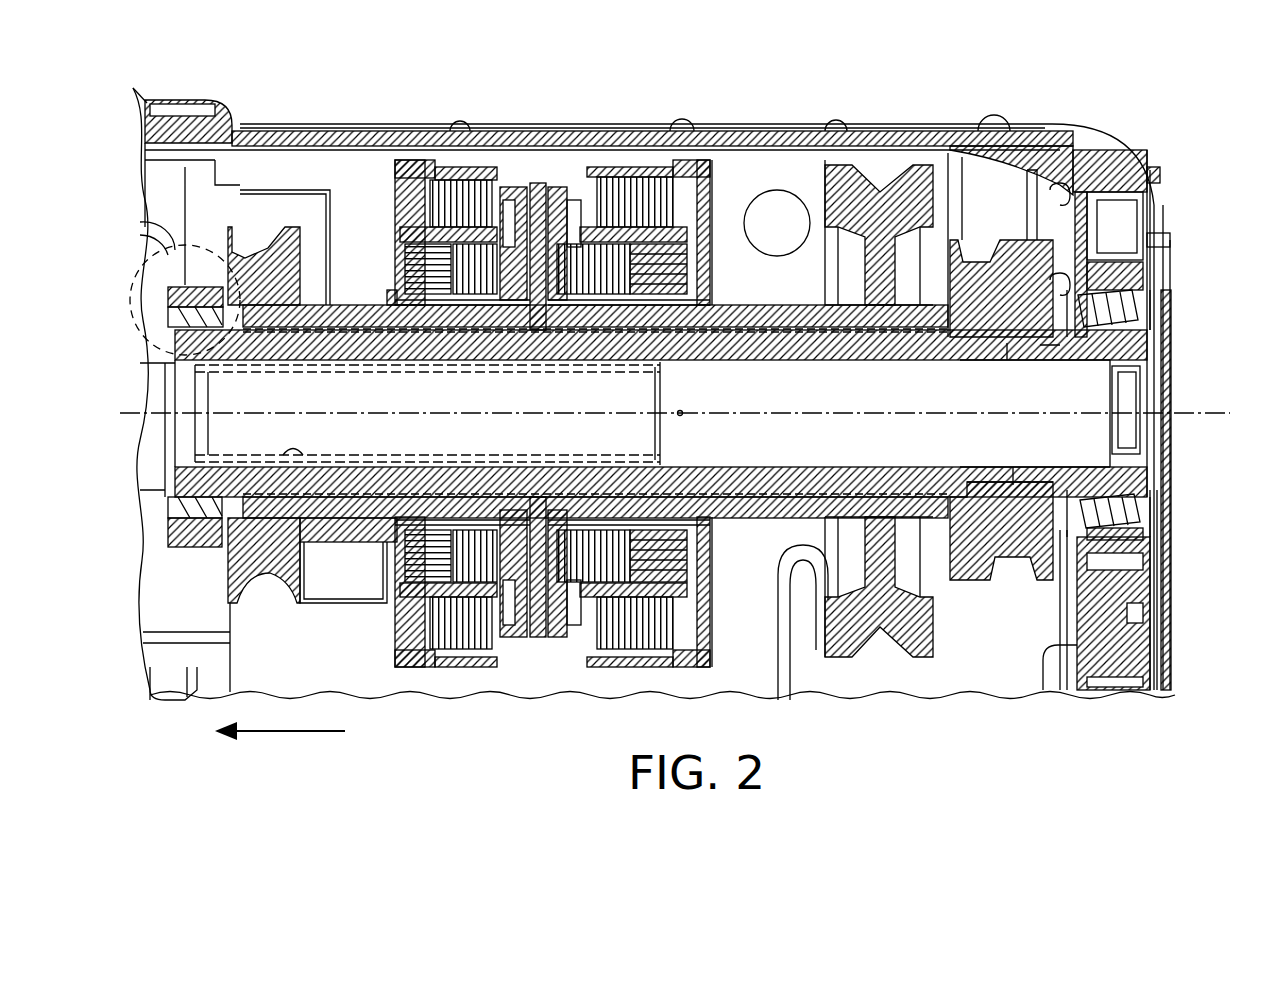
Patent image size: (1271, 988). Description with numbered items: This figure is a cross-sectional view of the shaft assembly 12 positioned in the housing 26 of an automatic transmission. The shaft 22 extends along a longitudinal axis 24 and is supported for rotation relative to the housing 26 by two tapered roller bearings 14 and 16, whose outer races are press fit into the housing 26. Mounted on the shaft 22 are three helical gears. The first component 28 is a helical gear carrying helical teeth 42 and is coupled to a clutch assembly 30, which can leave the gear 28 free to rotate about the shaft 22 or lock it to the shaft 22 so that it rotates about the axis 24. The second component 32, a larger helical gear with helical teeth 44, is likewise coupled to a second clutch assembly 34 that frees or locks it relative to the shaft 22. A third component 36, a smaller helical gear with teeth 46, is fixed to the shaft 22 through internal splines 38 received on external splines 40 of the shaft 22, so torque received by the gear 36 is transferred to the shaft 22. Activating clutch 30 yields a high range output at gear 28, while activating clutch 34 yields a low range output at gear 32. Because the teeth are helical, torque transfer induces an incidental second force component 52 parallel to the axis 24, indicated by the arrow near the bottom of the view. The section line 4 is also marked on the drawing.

The section line / detail region 4 is at (130, 306).
The shaft assembly 12 is at (738, 176).
The tapered roller bearing 14 is at (155, 512).
The tapered roller bearing 16 is at (1146, 319).
The shaft 22 is at (1093, 423).
The longitudinal axis 24 is at (1200, 405).
The housing 26 is at (1126, 166).
The first component 28 is at (315, 204).
The clutch assembly 30 is at (498, 163).
The second component 32 is at (812, 173).
The second clutch assembly 34 is at (632, 163).
The component 36 is at (988, 226).
The internal splines 38 is at (1006, 357).
The external splines 40 is at (1047, 357).
The helical teeth 42 is at (250, 233).
The helical teeth 44 is at (885, 173).
The teeth 46 is at (1013, 570).
The second force component 52 is at (292, 732).